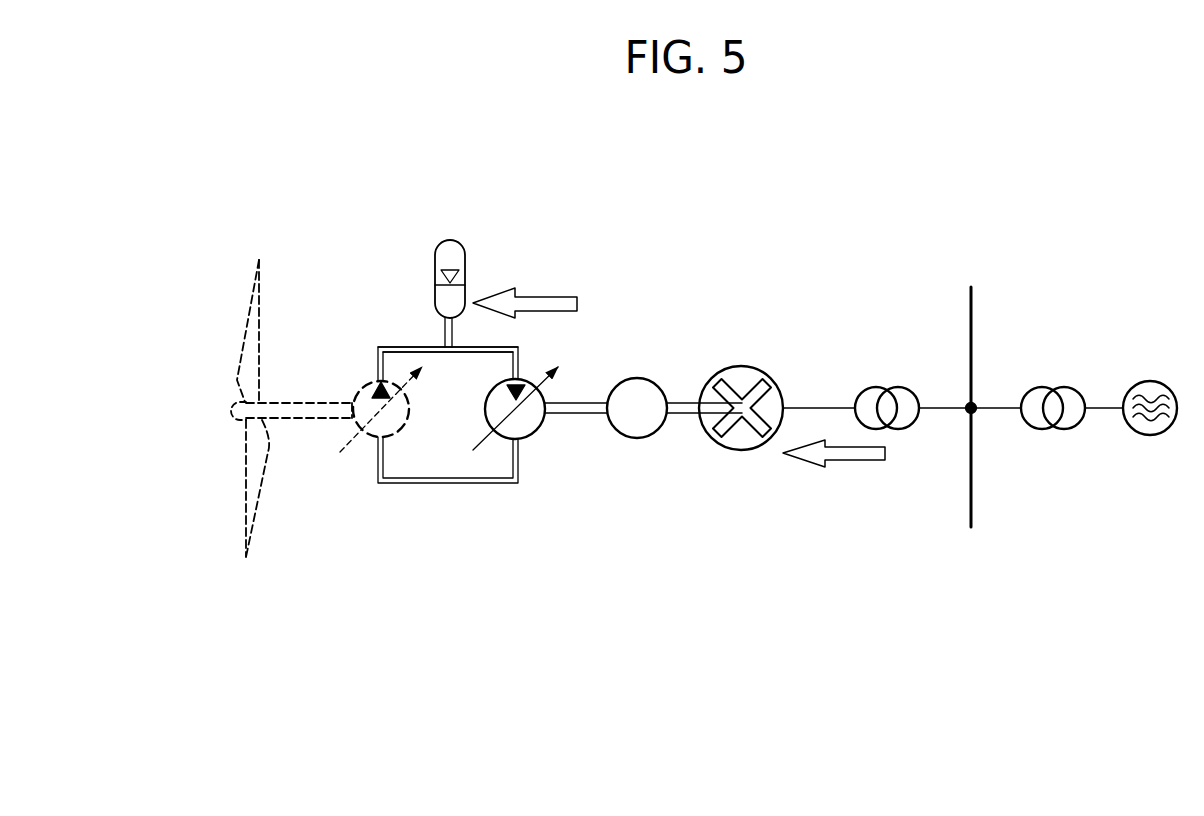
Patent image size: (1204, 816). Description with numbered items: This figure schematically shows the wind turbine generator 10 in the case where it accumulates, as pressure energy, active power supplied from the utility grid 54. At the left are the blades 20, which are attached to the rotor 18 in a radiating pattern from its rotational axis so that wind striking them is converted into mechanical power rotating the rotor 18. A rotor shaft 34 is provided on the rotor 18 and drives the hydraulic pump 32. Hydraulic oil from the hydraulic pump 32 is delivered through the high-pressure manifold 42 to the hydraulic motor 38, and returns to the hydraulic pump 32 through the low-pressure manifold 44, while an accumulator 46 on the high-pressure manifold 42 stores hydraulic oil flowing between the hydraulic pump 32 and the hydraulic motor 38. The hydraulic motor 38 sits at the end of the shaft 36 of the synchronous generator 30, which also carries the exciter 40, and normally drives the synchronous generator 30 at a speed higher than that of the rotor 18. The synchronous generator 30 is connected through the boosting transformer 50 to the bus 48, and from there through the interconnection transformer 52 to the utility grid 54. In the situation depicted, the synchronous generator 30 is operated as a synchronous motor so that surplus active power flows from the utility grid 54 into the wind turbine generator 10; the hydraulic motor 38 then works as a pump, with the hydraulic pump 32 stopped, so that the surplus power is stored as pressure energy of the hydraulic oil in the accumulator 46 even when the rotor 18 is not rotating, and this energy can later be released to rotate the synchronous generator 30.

The wind turbine generator 10 is at (940, 172).
The rotor 18 is at (231, 413).
The blades 20 is at (257, 307).
The synchronous generator 30 is at (742, 366).
The hydraulic pump 32 is at (353, 387).
The rotor shaft 34 is at (307, 421).
The shaft 36 is at (585, 400).
The hydraulic motor 38 is at (537, 437).
The exciter 40 is at (638, 378).
The high-pressure manifold 42 is at (400, 347).
The low-pressure manifold 44 is at (435, 485).
The accumulator 46 is at (435, 258).
The bus 48 is at (973, 298).
The boosting transformer 50 is at (878, 386).
The interconnection transformer 52 is at (1045, 386).
The utility grid 54 is at (1150, 380).